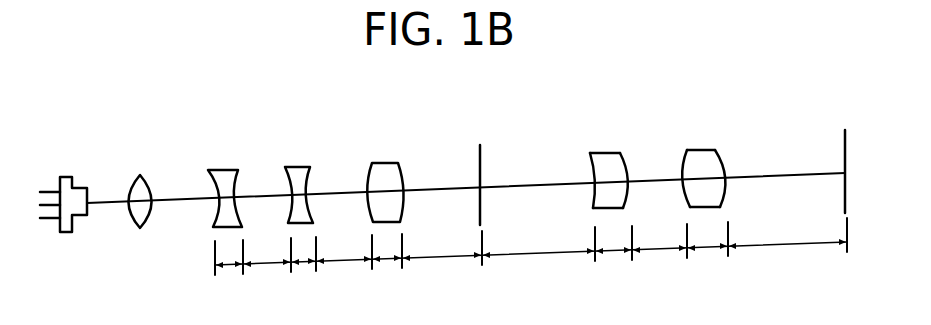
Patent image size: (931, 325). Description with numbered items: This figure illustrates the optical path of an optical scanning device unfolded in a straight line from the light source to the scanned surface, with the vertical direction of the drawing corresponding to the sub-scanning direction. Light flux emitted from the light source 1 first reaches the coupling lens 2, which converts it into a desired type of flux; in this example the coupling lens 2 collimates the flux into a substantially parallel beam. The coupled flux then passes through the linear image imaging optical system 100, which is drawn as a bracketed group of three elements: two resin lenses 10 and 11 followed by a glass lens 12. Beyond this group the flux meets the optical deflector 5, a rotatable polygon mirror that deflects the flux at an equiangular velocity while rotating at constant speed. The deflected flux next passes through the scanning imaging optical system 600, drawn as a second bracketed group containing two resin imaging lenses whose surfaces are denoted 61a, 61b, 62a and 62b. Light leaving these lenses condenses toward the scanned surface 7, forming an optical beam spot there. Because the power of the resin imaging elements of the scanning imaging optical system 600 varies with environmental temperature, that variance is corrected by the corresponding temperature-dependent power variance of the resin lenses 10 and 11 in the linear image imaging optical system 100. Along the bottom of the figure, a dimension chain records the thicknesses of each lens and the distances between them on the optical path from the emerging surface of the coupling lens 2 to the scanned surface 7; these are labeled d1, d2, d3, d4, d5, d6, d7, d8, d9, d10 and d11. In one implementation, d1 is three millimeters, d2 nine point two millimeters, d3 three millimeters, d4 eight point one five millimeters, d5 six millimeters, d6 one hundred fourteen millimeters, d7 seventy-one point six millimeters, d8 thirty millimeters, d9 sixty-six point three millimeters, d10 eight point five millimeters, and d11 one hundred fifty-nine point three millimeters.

The light source 1 is at (65, 178).
The coupling lens 2 is at (137, 180).
The linear image imaging optical system 100 is at (400, 112).
The resin lens 10 is at (225, 176).
The resin lens 11 is at (300, 175).
The glass lens 12 is at (386, 170).
The optical deflector 5 is at (481, 157).
The scanning imaging optical system 600 is at (786, 94).
The lens surface 61a is at (589, 161).
The lens surface 61b is at (631, 158).
The lens surface 62a is at (683, 160).
The lens surface 62b is at (727, 158).
The scanned surface 7 is at (846, 150).
The lens thickness d1 is at (230, 265).
The lens distance d2 is at (268, 263).
The lens thickness d3 is at (305, 262).
The lens distance d4 is at (347, 260).
The lens thickness d5 is at (388, 259).
The lens distance d6 is at (442, 257).
The lens distance d7 is at (537, 253).
The lens thickness d8 is at (615, 250).
The lens distance d9 is at (660, 249).
The lens thickness d10 is at (710, 247).
The lens distance d11 is at (787, 244).